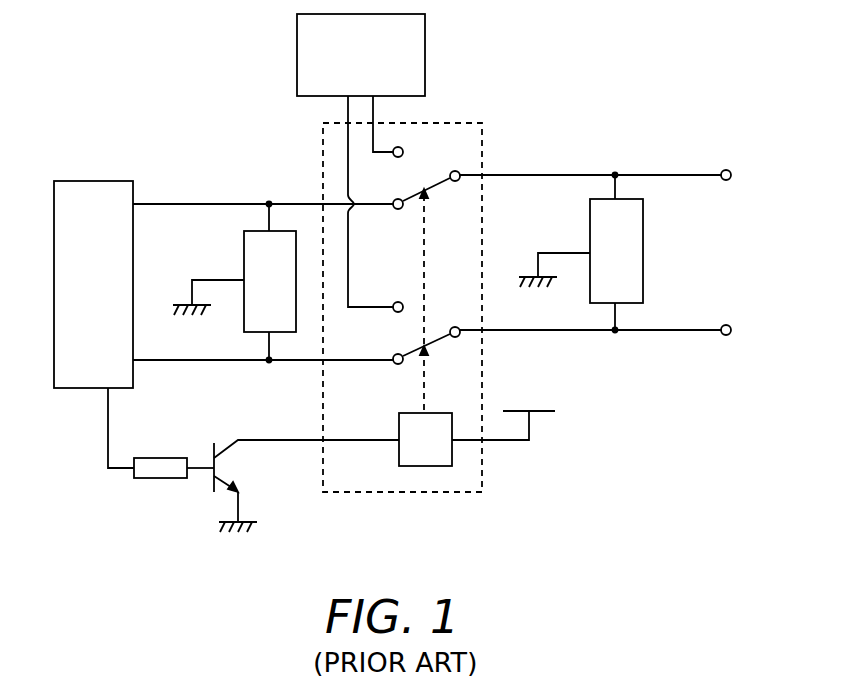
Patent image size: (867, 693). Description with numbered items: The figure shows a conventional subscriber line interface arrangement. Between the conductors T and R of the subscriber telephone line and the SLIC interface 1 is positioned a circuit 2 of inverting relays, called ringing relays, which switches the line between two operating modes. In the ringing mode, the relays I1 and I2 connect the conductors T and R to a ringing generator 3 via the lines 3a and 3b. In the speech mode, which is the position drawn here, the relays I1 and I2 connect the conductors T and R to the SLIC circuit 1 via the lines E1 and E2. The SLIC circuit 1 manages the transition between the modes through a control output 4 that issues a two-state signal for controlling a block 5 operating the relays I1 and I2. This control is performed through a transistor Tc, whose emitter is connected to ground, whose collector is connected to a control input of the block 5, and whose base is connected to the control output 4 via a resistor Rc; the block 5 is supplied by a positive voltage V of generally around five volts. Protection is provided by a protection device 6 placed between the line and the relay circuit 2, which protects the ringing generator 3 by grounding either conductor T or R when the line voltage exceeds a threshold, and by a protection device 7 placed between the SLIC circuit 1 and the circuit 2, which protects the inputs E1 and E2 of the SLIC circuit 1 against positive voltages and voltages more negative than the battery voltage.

The SLIC interface circuit 1 is at (92, 181).
The circuit of inverting relays 2 is at (482, 143).
The ringing generator 3 is at (425, 58).
The line 3a is at (347, 105).
The line 3b is at (373, 110).
The control output 4 is at (108, 415).
The block 5 is at (428, 466).
The protection device 6 is at (643, 221).
The protection device 7 is at (244, 258).
The input E1 is at (180, 204).
The input E2 is at (164, 361).
The relay I1 is at (426, 289).
The relay I2 is at (426, 336).
The conductor (Tip) T is at (595, 161).
The conductor (Ring) R is at (597, 316).
The positive voltage V is at (532, 396).
The resistor Rc is at (160, 458).
The transistor Tc is at (293, 486).